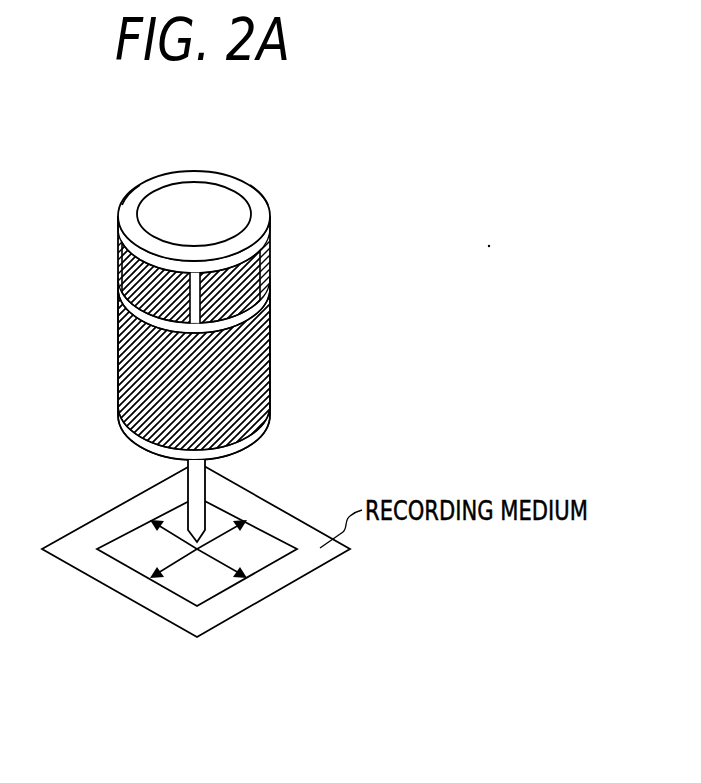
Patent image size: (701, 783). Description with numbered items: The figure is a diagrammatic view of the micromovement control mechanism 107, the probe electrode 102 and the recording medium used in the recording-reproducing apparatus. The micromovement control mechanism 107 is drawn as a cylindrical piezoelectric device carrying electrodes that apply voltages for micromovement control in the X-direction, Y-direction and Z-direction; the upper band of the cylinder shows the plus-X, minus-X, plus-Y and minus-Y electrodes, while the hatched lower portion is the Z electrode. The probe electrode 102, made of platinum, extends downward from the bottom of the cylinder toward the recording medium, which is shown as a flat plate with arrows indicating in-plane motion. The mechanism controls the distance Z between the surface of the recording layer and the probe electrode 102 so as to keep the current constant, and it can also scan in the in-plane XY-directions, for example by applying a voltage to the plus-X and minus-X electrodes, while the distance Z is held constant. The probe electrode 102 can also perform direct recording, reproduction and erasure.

The micromovement control mechanism 107 is at (217, 172).
The probe electrode 102 is at (197, 483).
The distance Z is at (258, 378).